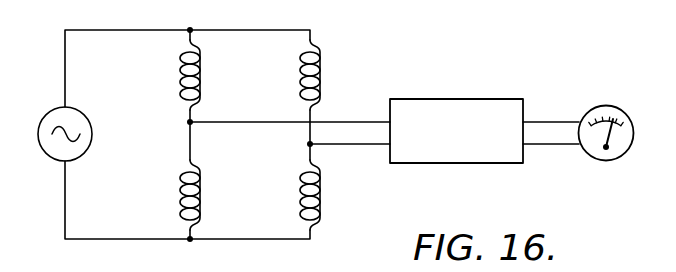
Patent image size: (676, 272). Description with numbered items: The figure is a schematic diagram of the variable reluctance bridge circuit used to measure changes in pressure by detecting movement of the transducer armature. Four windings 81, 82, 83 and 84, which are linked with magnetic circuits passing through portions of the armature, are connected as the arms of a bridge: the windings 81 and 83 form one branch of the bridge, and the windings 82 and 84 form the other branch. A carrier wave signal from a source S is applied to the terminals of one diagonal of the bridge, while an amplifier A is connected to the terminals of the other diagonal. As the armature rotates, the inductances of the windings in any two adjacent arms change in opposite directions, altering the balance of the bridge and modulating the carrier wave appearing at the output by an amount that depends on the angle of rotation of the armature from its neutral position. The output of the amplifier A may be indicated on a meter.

The source S is at (87, 117).
The winding 81 is at (203, 76).
The winding 82 is at (322, 66).
The winding 83 is at (203, 191).
The winding 84 is at (322, 197).
The amplifier A is at (473, 99).